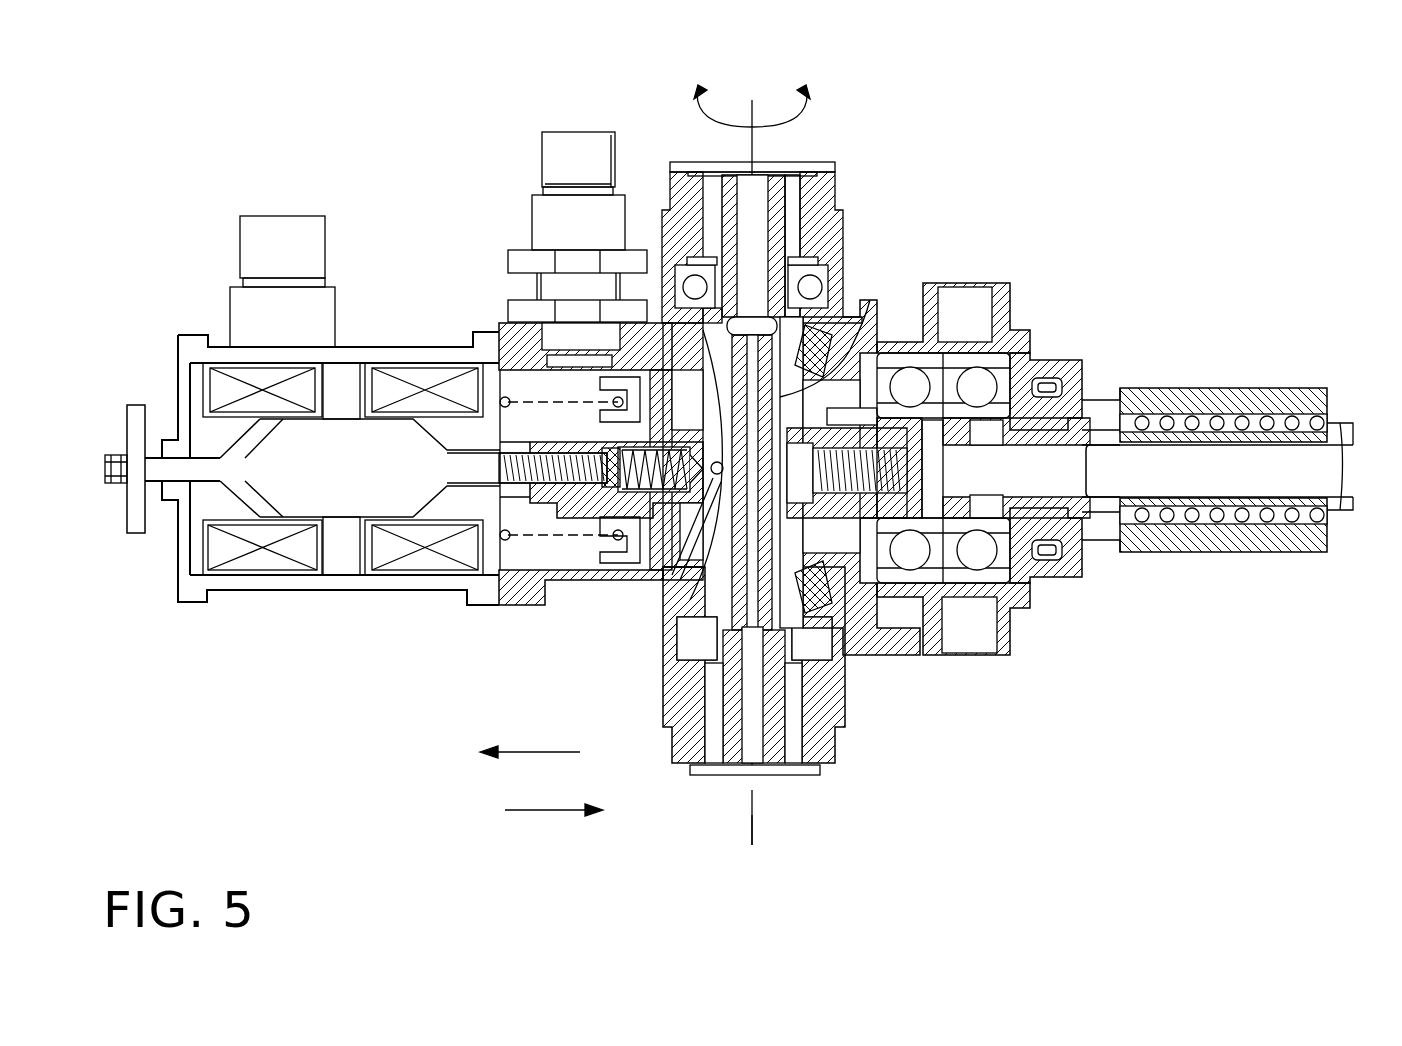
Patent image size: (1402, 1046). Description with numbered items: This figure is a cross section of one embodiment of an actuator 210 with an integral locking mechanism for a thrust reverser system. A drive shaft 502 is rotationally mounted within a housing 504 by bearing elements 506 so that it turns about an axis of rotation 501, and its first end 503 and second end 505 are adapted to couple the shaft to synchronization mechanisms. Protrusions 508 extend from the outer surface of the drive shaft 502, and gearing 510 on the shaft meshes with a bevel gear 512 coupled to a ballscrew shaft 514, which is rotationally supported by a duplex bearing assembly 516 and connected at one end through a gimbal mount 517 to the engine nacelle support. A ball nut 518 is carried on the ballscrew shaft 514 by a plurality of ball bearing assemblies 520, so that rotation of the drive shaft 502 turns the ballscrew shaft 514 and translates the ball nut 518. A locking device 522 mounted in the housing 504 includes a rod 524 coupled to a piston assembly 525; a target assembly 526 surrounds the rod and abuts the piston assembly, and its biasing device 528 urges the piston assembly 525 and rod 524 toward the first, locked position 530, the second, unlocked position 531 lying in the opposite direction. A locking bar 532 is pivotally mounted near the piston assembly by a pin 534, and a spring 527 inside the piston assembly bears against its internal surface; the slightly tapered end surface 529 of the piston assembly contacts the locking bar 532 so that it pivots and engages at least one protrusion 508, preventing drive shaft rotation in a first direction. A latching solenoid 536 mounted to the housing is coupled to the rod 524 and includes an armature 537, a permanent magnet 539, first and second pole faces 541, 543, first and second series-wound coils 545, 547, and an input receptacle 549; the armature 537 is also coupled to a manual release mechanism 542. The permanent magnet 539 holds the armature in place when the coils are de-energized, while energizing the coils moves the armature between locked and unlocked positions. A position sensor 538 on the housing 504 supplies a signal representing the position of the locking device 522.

The actuator 210 is at (483, 100).
The axis of rotation 501 is at (755, 830).
The drive shaft 502 is at (760, 200).
The first end 503 is at (722, 772).
The housing 504 is at (670, 163).
The second end 505 is at (762, 200).
The bearing elements 506 is at (697, 660).
The protrusions 508 is at (845, 345).
The gearing 510 is at (845, 652).
The bevel gear 512 is at (810, 327).
The ballscrew shaft 514 is at (1075, 437).
The duplex bearing assembly 516 is at (1005, 582).
The gimbal mount 517 is at (1013, 300).
The ball nut 518 is at (1272, 556).
The ball bearing assemblies 520 is at (1262, 418).
The locking device 522 is at (527, 635).
The rod 524 is at (503, 462).
The piston assembly 525 is at (572, 432).
The target assembly 526 is at (560, 512).
The spring 527 is at (622, 472).
The biasing device 528 is at (478, 602).
The end surface 529 is at (700, 365).
The first position 530 is at (548, 815).
The second position 531 is at (545, 765).
The locking bar 532 is at (690, 537).
The pin 534 is at (668, 598).
The solenoid 536 is at (305, 595).
The armature 537 is at (385, 453).
The position sensor 538 is at (530, 217).
The permanent magnet 539 is at (345, 560).
The first pole face 541 is at (418, 505).
The manual release mechanism 542 is at (133, 403).
The second pole face 543 is at (247, 485).
The first series-wound coil 545 is at (443, 368).
The second series-wound coil 547 is at (252, 373).
The input receptacle 549 is at (263, 242).